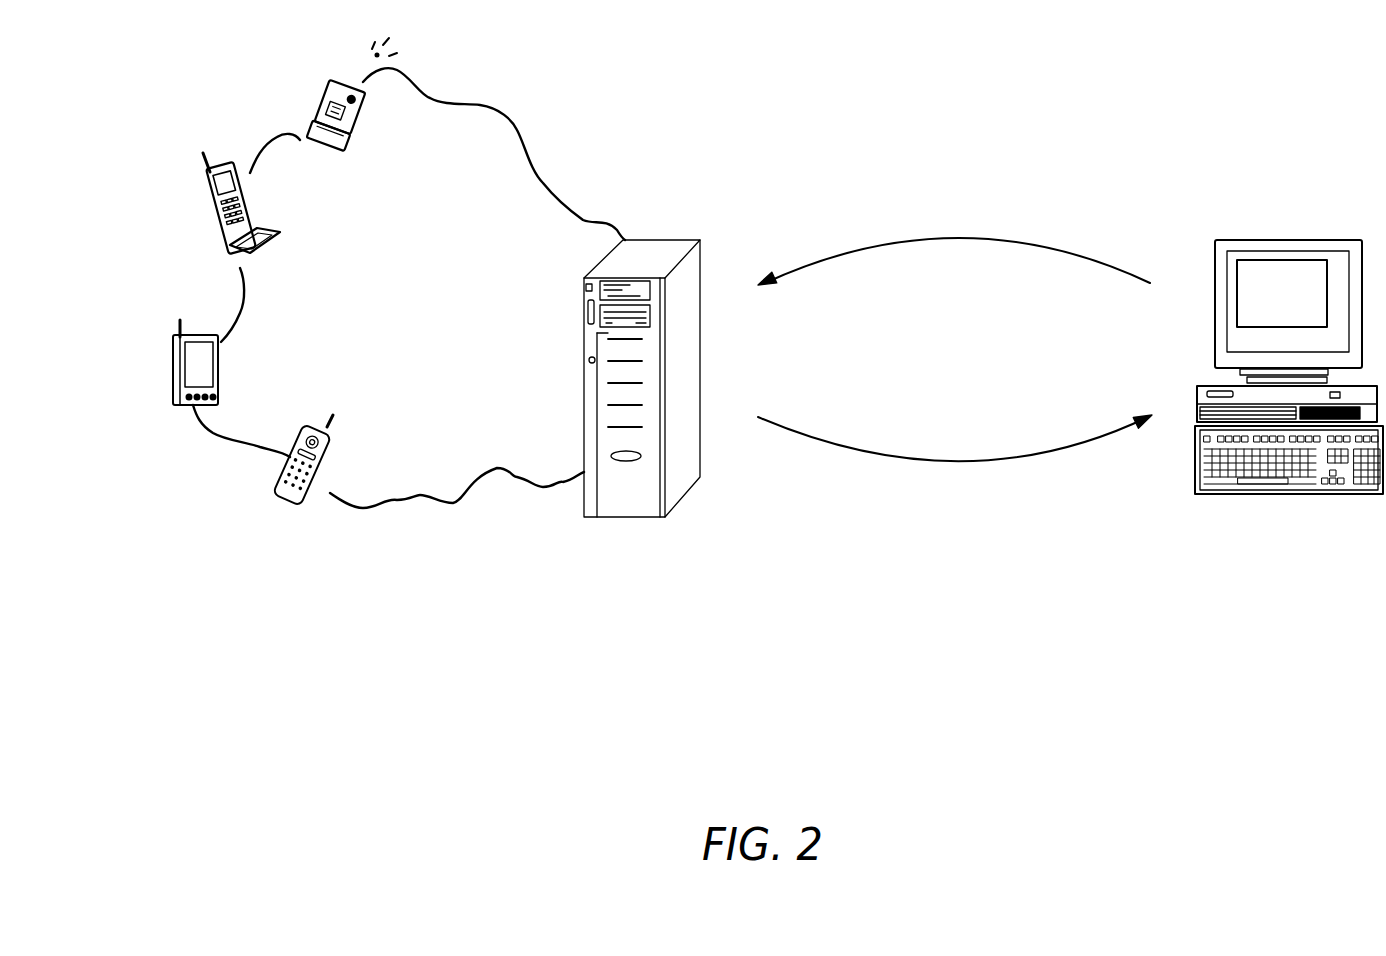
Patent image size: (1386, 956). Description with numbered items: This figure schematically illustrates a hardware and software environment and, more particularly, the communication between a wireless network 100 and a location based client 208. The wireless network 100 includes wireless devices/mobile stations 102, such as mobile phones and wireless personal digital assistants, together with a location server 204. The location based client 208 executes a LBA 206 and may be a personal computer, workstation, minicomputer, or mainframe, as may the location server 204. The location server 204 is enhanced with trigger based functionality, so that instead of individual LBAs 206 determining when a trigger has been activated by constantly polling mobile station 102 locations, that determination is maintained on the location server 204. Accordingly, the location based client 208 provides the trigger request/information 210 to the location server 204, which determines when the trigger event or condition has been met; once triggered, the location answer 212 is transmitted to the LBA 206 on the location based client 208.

The wireless network 100 is at (409, 288).
The wireless devices/mobile stations 102 is at (312, 109).
The location server 204 is at (623, 517).
The LBA 206 is at (1303, 258).
The location based client 208 is at (1338, 493).
The trigger request/information 210 is at (954, 231).
The location answer 212 is at (955, 479).